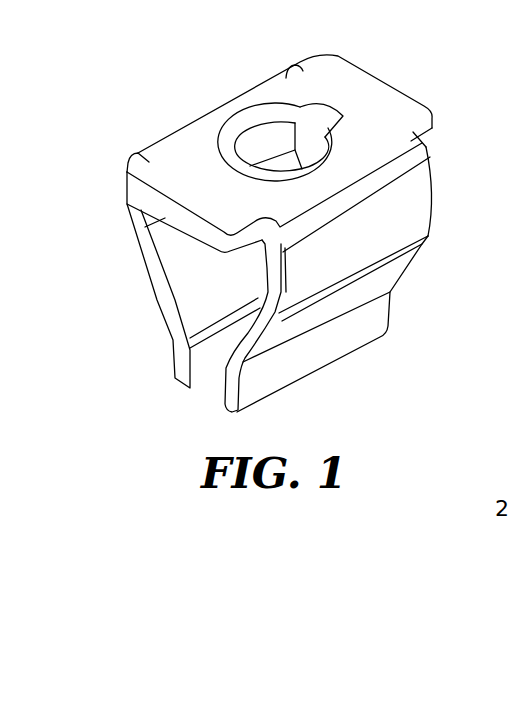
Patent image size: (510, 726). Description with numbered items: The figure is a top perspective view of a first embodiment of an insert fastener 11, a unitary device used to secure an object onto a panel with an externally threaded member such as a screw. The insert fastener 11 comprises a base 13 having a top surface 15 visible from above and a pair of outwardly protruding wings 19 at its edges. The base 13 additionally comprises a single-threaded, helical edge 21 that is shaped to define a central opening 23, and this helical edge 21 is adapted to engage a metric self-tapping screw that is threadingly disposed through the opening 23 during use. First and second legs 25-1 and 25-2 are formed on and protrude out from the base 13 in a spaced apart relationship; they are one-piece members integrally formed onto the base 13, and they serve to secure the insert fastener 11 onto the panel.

The insert fastener 11 is at (157, 407).
The base 13 is at (177, 150).
The top surface 15 is at (272, 88).
The wings 19 is at (417, 103).
The helical edge 21 is at (235, 130).
The central opening 23 is at (308, 140).
The first leg 25-1 is at (148, 326).
The second leg 25-2 is at (412, 306).